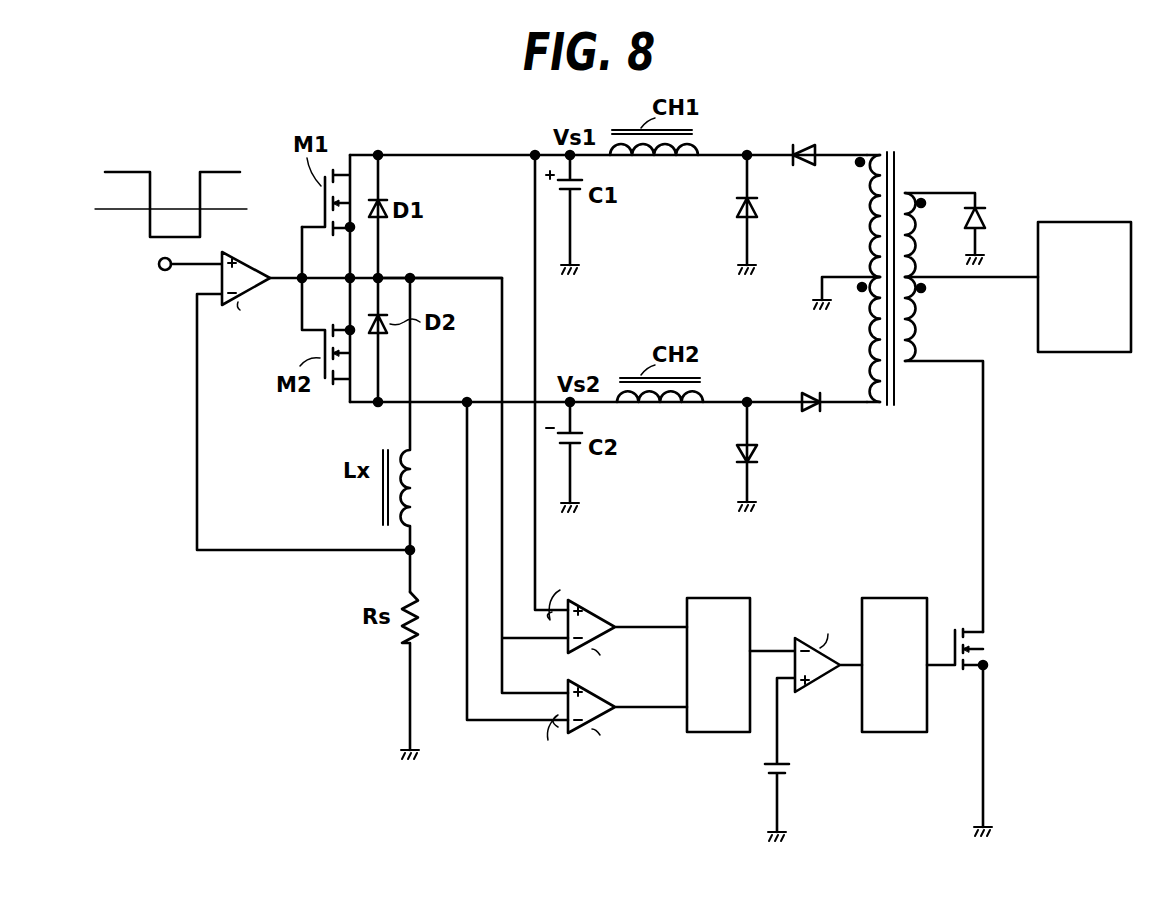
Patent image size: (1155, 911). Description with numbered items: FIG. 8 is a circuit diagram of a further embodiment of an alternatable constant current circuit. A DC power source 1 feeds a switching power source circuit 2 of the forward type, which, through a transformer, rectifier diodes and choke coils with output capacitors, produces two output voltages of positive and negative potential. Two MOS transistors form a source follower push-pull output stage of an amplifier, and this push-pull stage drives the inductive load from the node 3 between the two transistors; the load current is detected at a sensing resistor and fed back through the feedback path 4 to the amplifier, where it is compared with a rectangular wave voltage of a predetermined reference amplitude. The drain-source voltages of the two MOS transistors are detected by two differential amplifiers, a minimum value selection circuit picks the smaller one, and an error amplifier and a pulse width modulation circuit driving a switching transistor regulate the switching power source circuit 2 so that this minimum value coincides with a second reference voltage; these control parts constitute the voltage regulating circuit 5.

The DC power source 1 is at (1088, 222).
The switching power source circuit 2 is at (818, 529).
The switching node of push-pull driver stage 3 is at (405, 262).
The amplifier feedback loop 4 is at (192, 357).
The voltage regulating circuit 5 is at (687, 841).